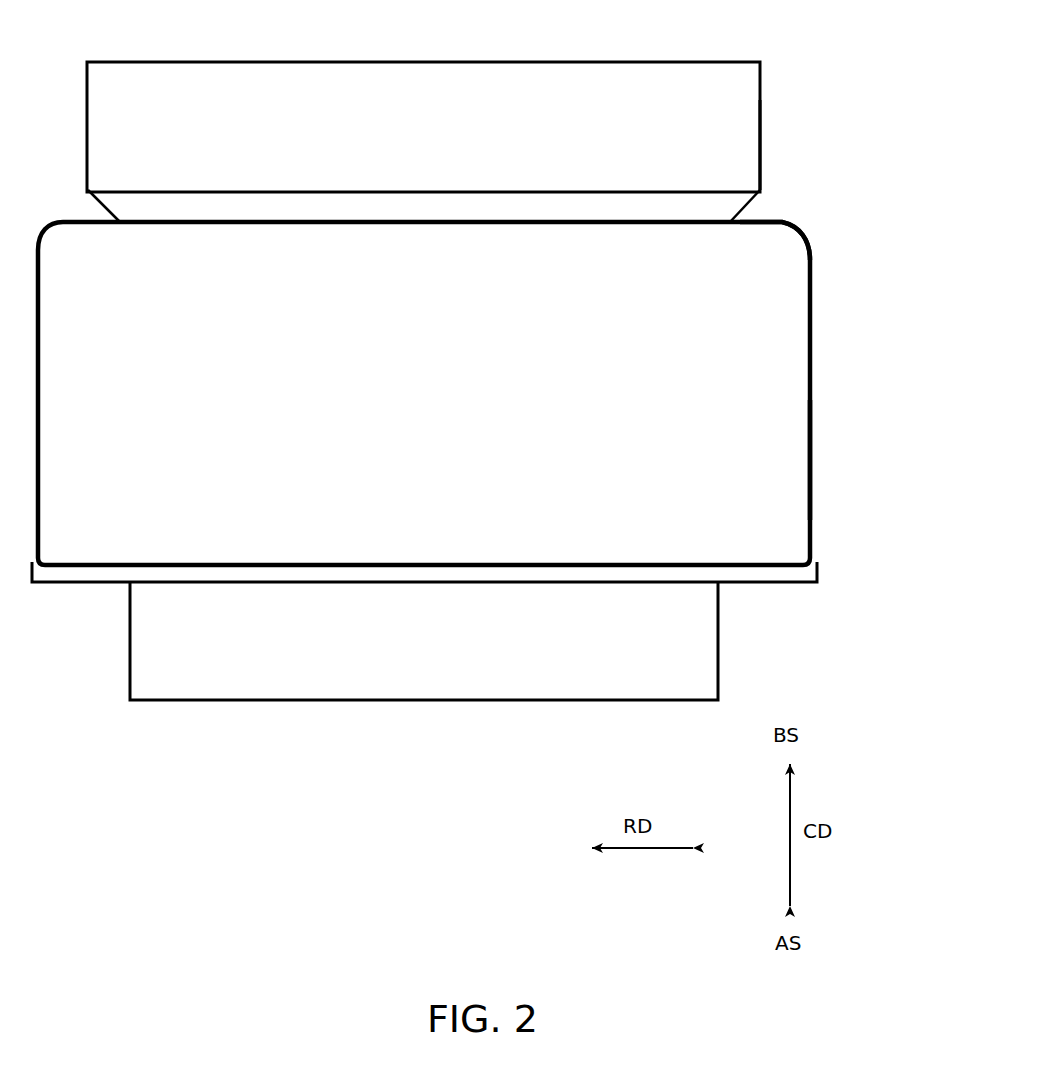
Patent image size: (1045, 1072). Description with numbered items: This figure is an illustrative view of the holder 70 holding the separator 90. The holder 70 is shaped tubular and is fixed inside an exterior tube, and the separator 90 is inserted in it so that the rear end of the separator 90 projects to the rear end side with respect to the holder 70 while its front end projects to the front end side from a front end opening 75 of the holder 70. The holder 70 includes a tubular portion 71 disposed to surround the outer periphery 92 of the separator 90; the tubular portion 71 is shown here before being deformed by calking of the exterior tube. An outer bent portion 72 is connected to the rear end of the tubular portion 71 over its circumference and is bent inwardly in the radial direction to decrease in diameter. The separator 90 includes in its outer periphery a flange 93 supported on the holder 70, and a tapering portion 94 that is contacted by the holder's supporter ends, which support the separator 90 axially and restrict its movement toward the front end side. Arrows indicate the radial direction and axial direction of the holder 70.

The separator 90 is at (768, 99).
The flange 93 is at (742, 160).
The tapering portion 94 is at (738, 210).
The holder 70 is at (816, 333).
The outer bent portion 72 is at (812, 234).
The tubular portion 71 is at (812, 458).
The front end opening 75 is at (775, 590).
The outer periphery 92 is at (712, 652).